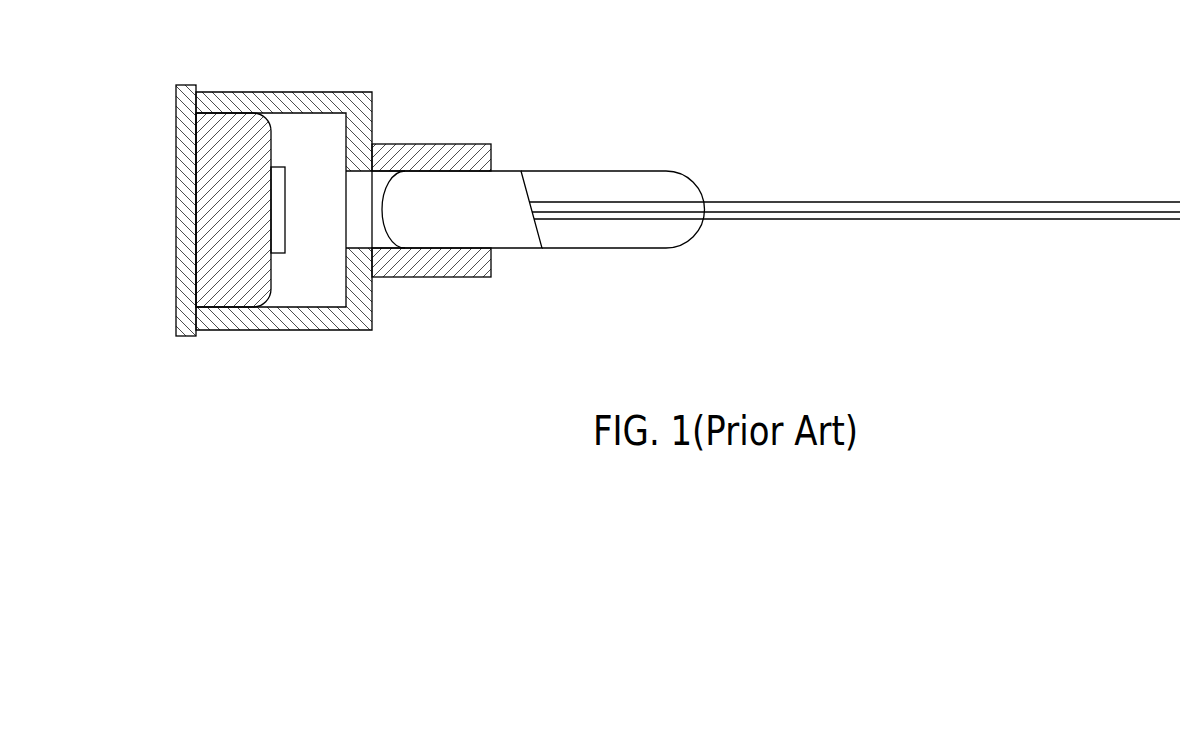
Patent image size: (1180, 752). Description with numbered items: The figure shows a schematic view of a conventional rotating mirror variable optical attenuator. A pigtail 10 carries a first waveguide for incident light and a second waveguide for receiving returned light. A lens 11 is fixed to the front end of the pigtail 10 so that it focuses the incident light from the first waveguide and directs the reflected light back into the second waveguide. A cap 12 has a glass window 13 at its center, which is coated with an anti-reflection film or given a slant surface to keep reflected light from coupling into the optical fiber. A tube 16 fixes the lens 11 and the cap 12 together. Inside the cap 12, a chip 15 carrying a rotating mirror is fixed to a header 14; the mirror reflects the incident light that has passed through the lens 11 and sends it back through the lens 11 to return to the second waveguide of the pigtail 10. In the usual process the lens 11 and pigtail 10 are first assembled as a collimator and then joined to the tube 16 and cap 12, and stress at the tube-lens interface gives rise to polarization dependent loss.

The pigtail 10 is at (640, 178).
The lens 11 is at (505, 178).
The cap 12 is at (360, 115).
The glass window 13 is at (358, 228).
The header 14 is at (218, 257).
The chip 15 is at (275, 204).
The tube 16 is at (441, 160).